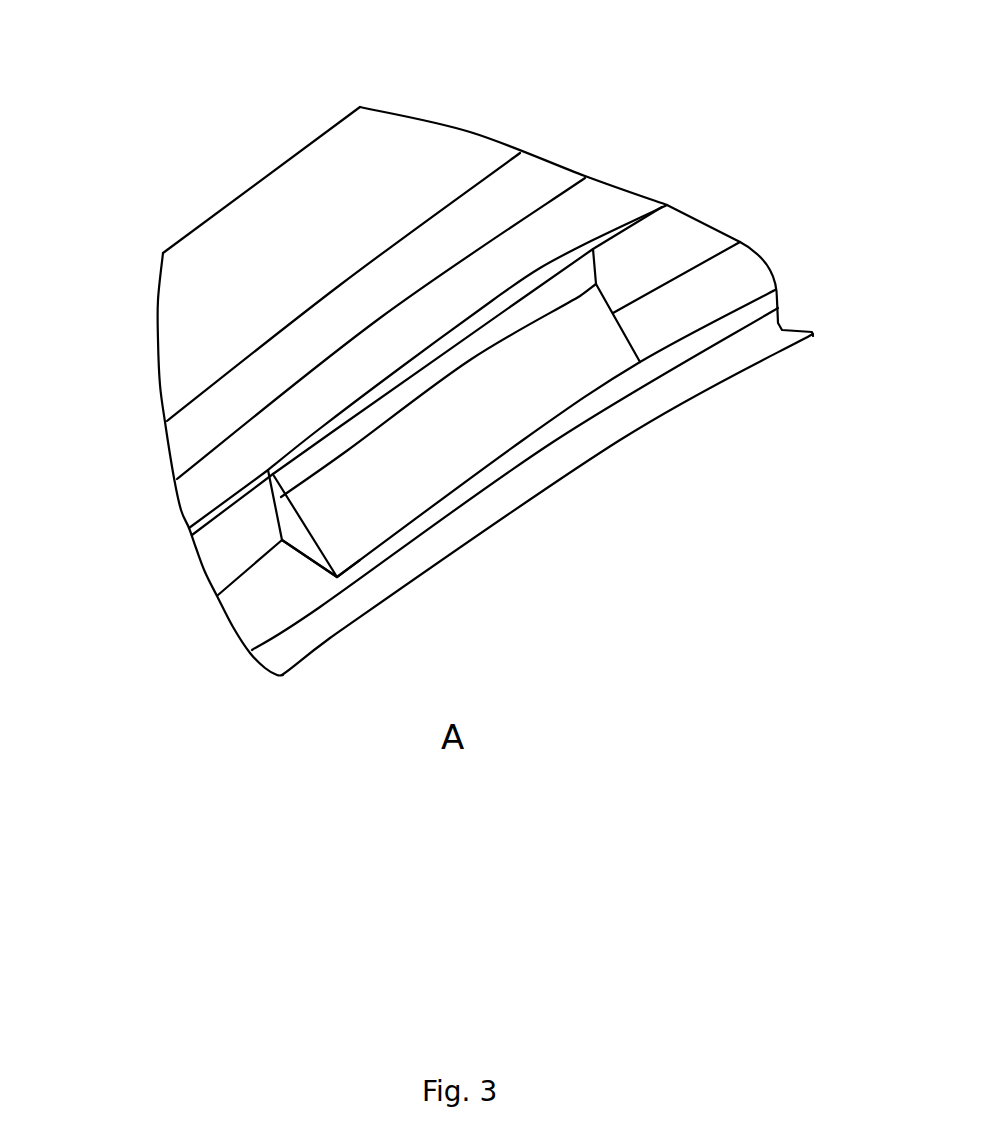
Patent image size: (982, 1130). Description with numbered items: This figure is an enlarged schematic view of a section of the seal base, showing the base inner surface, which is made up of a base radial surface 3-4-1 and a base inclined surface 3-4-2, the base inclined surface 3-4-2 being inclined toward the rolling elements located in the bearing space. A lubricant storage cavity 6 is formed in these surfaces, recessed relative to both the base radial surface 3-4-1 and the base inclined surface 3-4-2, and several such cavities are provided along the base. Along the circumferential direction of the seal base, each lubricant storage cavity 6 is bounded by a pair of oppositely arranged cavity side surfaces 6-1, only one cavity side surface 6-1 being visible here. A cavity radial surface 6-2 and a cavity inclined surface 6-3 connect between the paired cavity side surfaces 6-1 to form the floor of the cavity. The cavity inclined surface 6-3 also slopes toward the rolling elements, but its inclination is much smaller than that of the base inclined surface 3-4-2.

The lubricant storage cavity 6 is at (738, 265).
The cavity side surface 6-1 is at (298, 532).
The cavity radial surface 6-2 is at (240, 532).
The cavity inclined surface 6-3 is at (293, 578).
The base radial surface 3-4-1 is at (573, 278).
The base inclined surface 3-4-2 is at (560, 362).